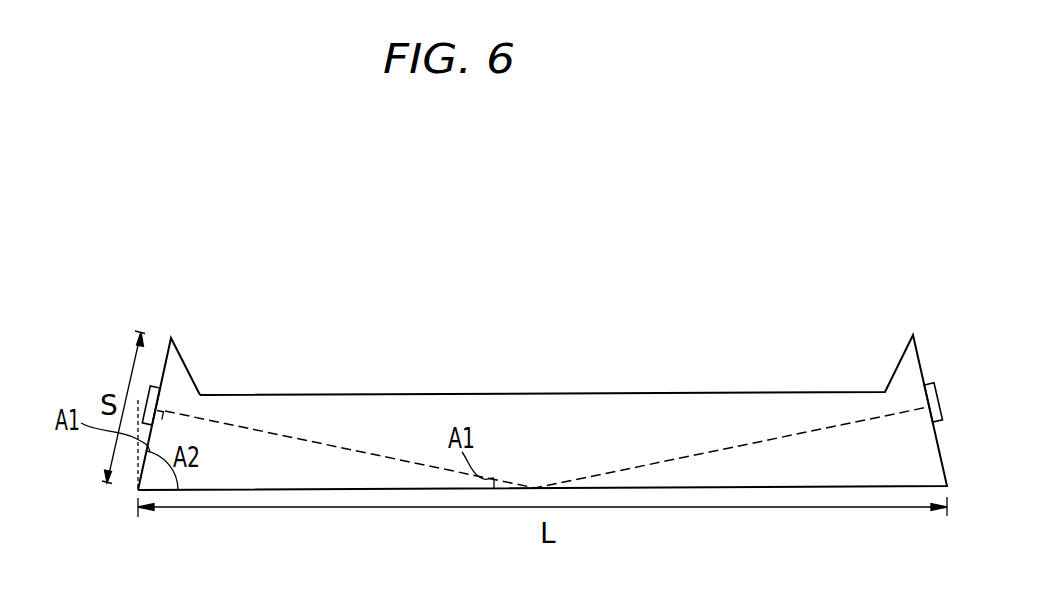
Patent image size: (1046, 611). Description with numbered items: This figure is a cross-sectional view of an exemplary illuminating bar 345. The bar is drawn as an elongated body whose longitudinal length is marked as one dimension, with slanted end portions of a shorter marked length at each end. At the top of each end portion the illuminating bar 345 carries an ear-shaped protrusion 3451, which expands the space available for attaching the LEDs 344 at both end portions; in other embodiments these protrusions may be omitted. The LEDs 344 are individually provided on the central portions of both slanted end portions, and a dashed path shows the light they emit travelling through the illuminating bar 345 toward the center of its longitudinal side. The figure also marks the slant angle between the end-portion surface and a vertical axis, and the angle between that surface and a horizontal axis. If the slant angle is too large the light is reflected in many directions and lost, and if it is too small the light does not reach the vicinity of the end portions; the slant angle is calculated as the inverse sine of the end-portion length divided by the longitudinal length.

The LEDs 344 is at (153, 387).
The illuminating bar 345 is at (540, 393).
The ear-shaped protrusions 3451 is at (183, 360).